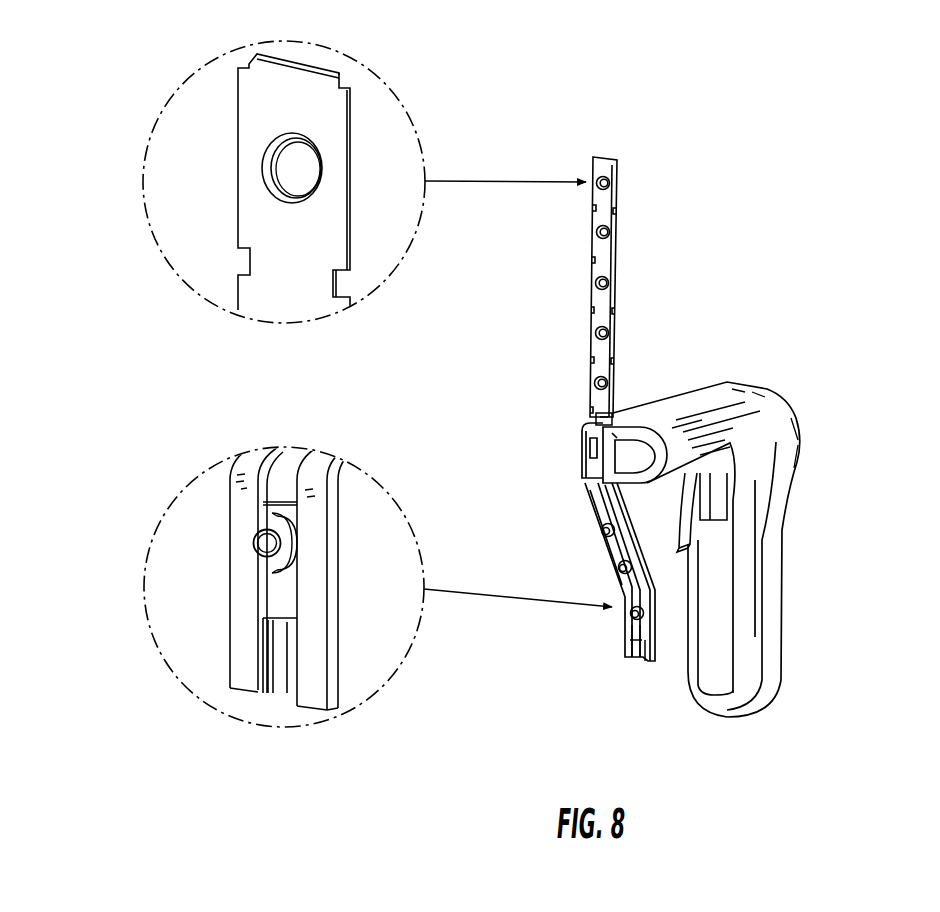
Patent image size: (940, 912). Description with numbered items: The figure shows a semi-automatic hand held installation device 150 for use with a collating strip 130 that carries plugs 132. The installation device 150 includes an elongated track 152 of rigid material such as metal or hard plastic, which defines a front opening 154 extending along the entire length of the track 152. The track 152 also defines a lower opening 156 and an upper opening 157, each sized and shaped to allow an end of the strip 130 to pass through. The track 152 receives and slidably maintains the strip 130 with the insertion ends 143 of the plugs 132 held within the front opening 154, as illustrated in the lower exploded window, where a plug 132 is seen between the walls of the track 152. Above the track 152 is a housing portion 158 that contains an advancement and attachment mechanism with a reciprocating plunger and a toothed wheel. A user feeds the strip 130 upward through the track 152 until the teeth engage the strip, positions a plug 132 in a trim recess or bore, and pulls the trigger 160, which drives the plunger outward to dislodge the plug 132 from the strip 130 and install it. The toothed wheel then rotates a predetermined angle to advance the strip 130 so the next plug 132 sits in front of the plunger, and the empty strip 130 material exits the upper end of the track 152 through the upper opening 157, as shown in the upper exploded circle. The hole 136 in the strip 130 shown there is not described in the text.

The strip 130 is at (232, 241).
The blade aperture 136 is at (272, 167).
The plug 132 is at (258, 526).
The insertion end 143 is at (266, 543).
The installation device 150 is at (836, 398).
The track 152 is at (658, 590).
The front opening 154 is at (616, 566).
The lower opening 156 is at (639, 672).
The upper opening 157 is at (608, 413).
The housing portion 158 is at (636, 464).
The trigger 160 is at (691, 543).